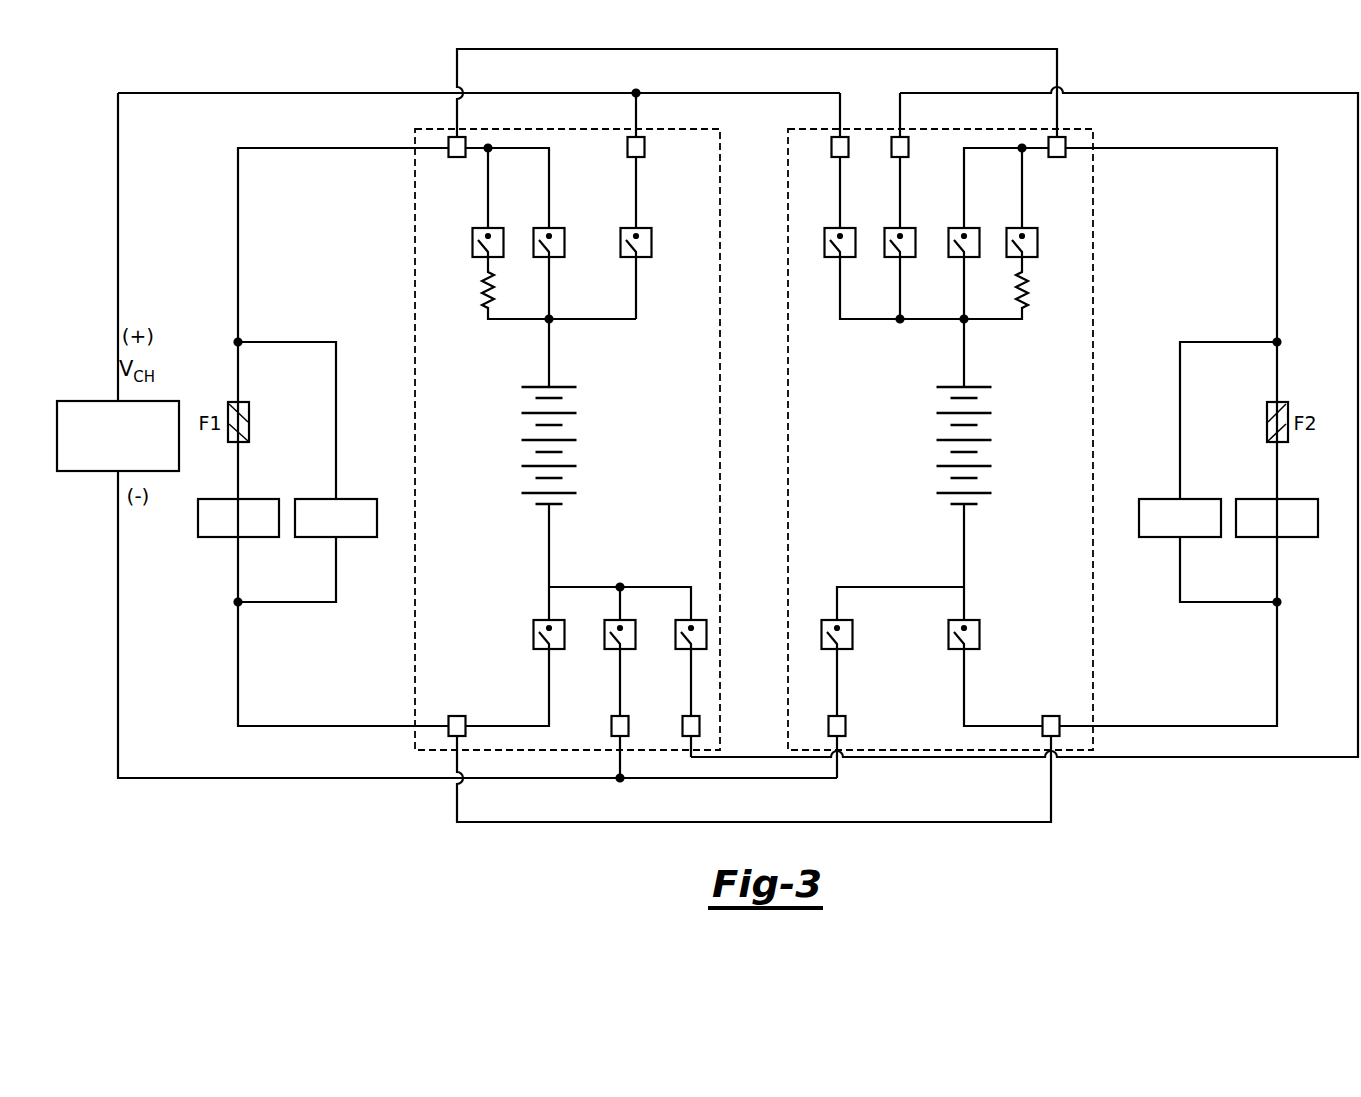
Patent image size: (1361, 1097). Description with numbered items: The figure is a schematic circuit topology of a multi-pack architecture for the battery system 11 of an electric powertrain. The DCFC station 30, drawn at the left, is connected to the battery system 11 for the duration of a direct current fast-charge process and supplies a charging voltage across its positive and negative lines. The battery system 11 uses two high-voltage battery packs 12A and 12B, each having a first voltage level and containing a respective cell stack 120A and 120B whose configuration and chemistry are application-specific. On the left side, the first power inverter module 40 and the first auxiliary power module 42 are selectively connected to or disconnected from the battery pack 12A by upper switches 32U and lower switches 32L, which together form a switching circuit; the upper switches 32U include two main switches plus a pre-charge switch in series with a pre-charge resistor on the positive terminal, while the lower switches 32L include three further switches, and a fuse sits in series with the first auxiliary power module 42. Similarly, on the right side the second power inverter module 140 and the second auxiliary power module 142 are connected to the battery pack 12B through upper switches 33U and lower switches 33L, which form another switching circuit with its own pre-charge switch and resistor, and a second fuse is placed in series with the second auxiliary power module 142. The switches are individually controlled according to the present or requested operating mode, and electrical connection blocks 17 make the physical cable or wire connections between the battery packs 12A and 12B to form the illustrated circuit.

The battery system 11 is at (1226, 64).
The first battery pack 12A is at (687, 129).
The second battery pack 12B is at (876, 129).
The electrical connection block 17 is at (450, 133).
The DCFC station 30 is at (84, 400).
The upper switches 32U is at (687, 330).
The lower switches 32L is at (505, 598).
The upper switches 33U is at (1072, 330).
The lower switches 33L is at (1003, 598).
The first power inverter module 40 is at (360, 499).
The first auxiliary power module 42 is at (207, 537).
The cell stack 120A is at (593, 438).
The cell stack 120B is at (925, 438).
The second power inverter module 140 is at (1158, 537).
The second auxiliary power module 142 is at (1298, 537).